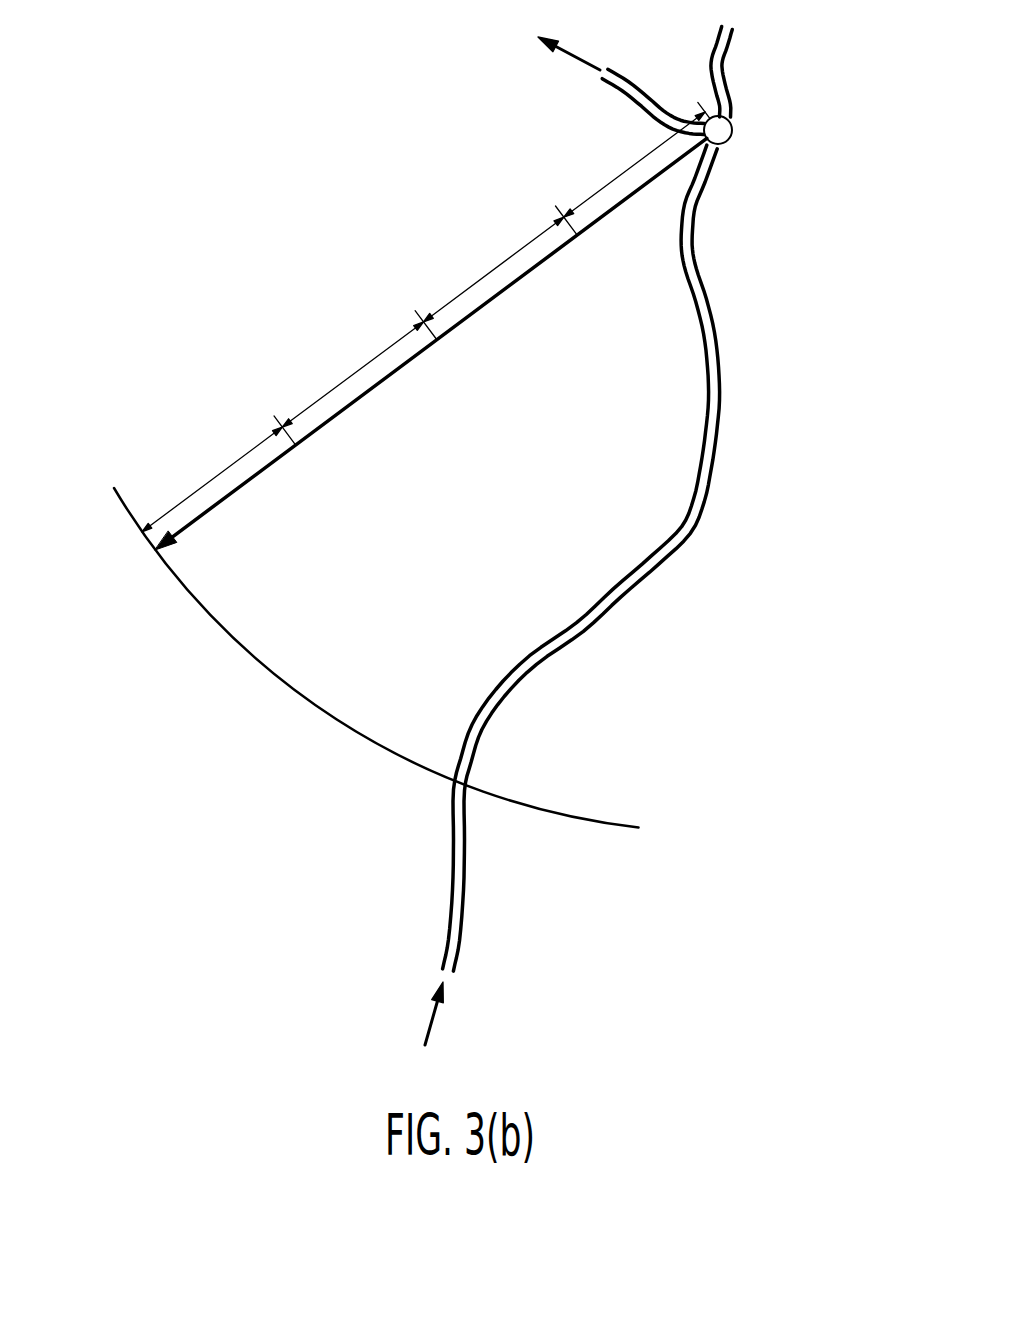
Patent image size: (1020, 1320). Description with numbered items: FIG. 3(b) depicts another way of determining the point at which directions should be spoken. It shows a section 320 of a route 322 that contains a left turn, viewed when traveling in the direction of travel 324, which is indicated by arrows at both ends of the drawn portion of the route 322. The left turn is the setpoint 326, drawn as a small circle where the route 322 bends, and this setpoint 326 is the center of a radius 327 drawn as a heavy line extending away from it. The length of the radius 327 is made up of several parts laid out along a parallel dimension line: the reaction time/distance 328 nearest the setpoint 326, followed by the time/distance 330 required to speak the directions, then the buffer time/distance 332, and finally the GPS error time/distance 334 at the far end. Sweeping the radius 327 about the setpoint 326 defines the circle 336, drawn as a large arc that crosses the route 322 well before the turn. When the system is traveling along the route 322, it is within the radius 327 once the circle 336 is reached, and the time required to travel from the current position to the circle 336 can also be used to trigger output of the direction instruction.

The section of a route 320 is at (459, 539).
The route 322 is at (648, 98).
The direction of travel 324 is at (573, 50).
The setpoint 326 is at (737, 132).
The radius 327 is at (412, 358).
The reaction time/distance 328 is at (617, 172).
The time/distance required to speak the directions 330 is at (494, 262).
The buffer time/distance 332 is at (352, 368).
The GPS error time/distance 334 is at (224, 464).
The circle 336 is at (507, 800).